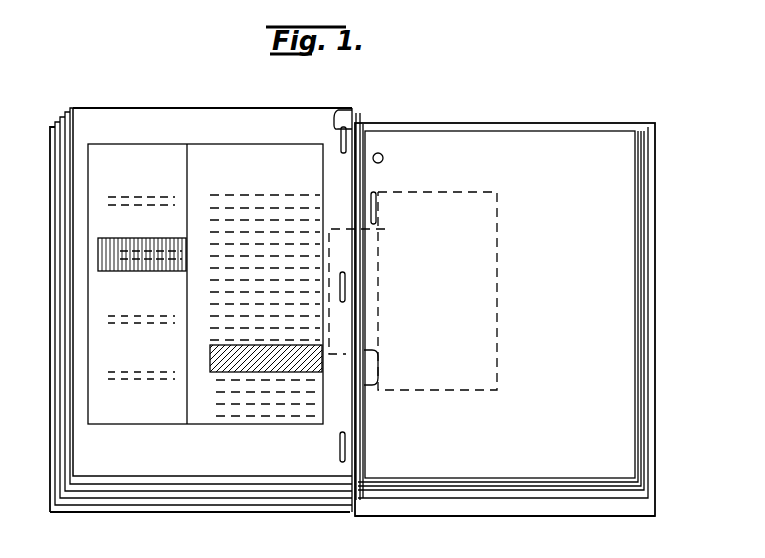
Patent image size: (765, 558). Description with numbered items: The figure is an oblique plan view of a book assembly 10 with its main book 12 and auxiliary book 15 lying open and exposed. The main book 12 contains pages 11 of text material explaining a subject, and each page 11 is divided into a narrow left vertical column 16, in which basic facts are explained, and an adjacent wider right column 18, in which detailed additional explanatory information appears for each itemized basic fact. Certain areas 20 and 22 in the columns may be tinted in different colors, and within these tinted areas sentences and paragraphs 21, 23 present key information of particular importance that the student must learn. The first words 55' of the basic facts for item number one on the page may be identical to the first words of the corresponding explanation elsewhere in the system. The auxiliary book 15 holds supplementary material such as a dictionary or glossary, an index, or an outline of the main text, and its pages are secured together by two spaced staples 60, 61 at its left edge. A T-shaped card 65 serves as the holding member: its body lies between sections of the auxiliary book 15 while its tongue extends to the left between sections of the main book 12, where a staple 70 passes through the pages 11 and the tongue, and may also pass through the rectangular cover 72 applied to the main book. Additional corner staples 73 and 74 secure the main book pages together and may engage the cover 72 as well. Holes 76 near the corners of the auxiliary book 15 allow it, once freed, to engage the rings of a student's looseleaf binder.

The book assembly 10 is at (672, 326).
The pages 11 is at (272, 130).
The main book 12 is at (226, 100).
The auxiliary book 15 is at (507, 117).
The narrow left vertical column 16 is at (162, 165).
The wider right column 18 is at (306, 157).
The tinted area 20 is at (98, 245).
The sentences and paragraphs 21 is at (98, 261).
The tinted area 22 is at (212, 356).
The sentences and paragraphs 23 is at (298, 372).
The first words 55' is at (85, 178).
The staple 60 is at (377, 211).
The staple 61 is at (380, 369).
The T-shaped card 65 is at (418, 392).
The staple 70 is at (346, 282).
The rectangular cover 72 is at (547, 506).
The corner staple 73 is at (336, 122).
The corner staple 74 is at (338, 452).
The holes 76 is at (382, 154).